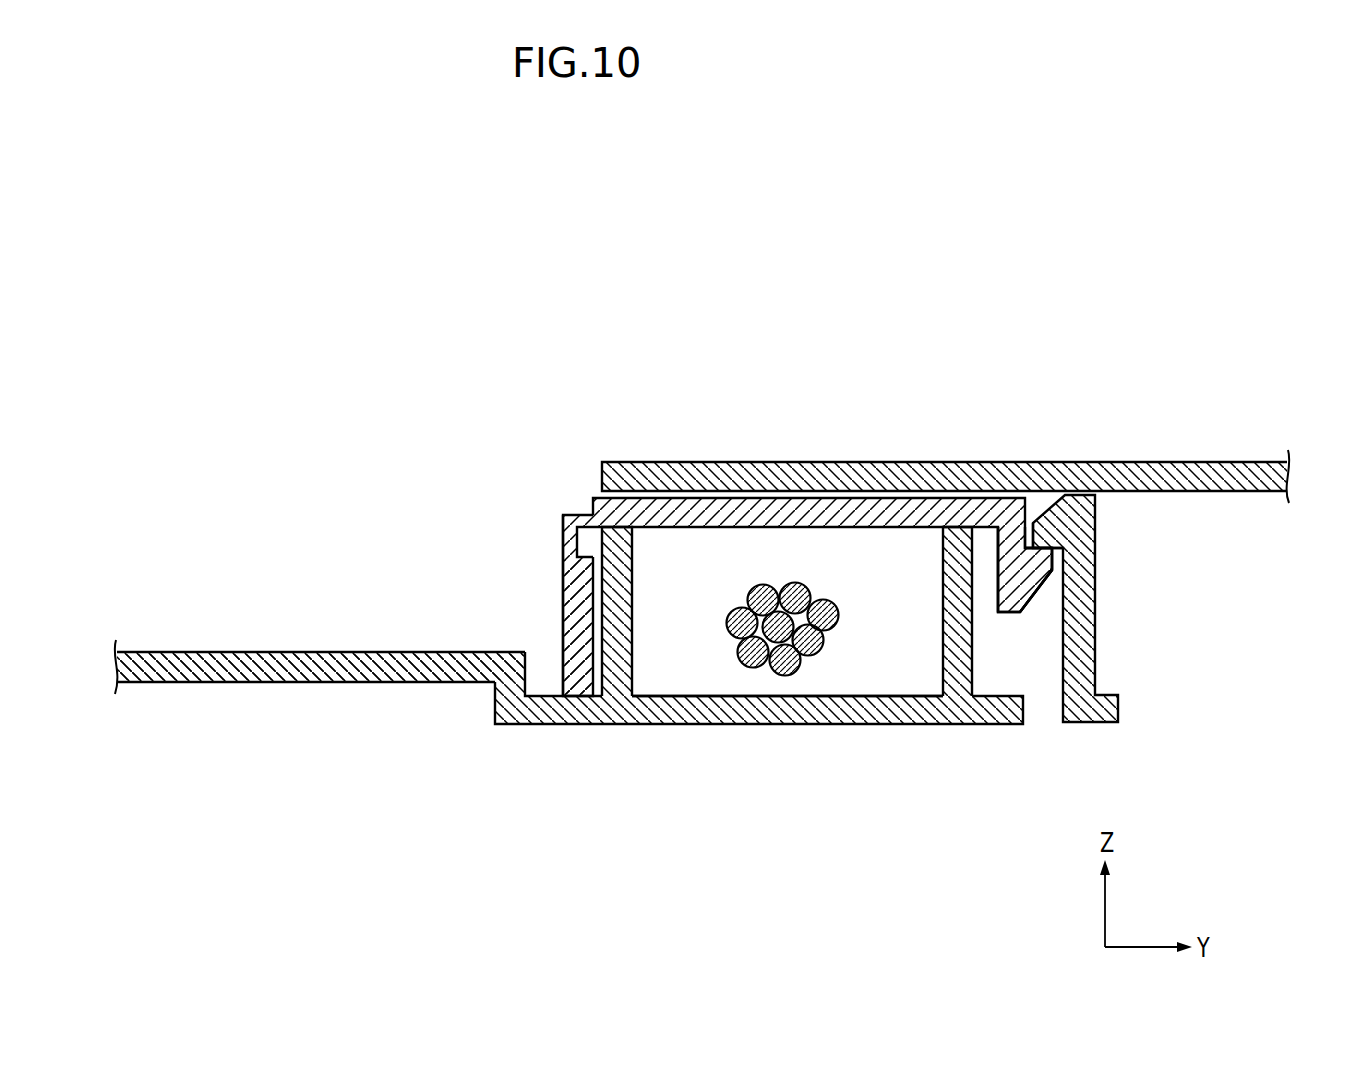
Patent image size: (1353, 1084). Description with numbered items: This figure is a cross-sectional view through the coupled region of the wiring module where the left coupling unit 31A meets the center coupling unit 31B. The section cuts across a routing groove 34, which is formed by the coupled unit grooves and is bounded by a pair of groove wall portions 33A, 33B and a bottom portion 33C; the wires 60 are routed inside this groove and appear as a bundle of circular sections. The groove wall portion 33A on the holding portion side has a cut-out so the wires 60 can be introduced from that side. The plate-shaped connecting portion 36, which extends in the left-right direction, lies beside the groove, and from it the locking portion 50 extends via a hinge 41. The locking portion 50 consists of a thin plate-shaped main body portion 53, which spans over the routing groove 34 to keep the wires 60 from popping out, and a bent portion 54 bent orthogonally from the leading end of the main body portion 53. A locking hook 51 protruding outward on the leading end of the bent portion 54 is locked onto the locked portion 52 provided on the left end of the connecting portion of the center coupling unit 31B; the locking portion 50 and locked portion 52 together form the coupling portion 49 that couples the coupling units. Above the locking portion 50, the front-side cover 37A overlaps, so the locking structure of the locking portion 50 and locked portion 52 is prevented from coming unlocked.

The left coupling unit 31A is at (577, 620).
The center coupling unit 31B is at (350, 673).
The groove wall portion 33A is at (953, 653).
The groove wall portion 33B is at (623, 647).
The bottom portion 33C is at (792, 707).
The routing groove 34 is at (697, 697).
The connecting portion 36 is at (230, 672).
The front-side cover 37A is at (789, 478).
The hinge 41 is at (568, 515).
The coupling portion 49 is at (1038, 523).
The locking portion 50 is at (958, 506).
The locking hook 51 is at (1033, 582).
The locked portion 52 is at (1048, 527).
The main body portion 53 is at (737, 508).
The bent portion 54 is at (1000, 548).
The wire 60 is at (826, 606).